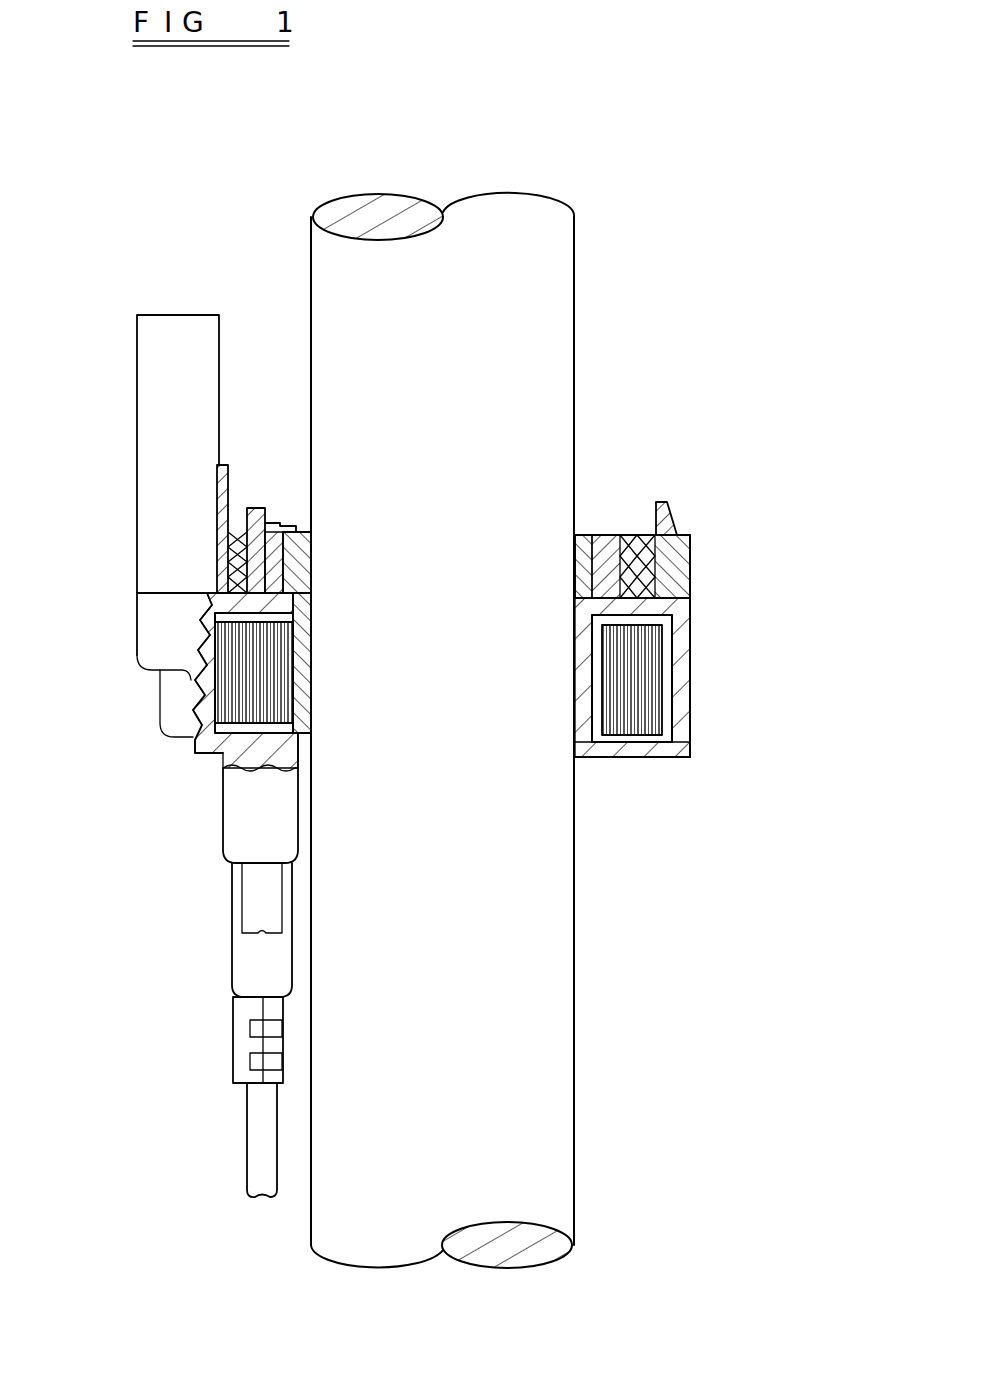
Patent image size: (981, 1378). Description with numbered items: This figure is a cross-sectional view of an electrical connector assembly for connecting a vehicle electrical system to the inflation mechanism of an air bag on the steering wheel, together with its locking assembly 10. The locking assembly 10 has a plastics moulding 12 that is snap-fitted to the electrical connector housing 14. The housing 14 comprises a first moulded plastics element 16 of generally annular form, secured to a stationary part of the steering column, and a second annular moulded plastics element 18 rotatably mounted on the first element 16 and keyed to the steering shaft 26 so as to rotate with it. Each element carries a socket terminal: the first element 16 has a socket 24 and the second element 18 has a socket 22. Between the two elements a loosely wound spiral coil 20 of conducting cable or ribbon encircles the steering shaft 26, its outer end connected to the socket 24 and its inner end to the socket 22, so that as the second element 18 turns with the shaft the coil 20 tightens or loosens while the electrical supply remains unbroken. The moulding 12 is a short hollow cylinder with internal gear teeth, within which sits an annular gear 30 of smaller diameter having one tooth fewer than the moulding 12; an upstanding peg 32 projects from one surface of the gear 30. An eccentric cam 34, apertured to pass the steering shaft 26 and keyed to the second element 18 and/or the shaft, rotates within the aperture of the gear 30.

The locking assembly 10 is at (712, 550).
The plastics moulding 12 is at (693, 578).
The housing 14 is at (718, 684).
The first moulded plastics element 16 is at (680, 712).
The second annular moulded plastics element 18 is at (656, 757).
The spiral coil 20 is at (230, 690).
The socket terminal 22 is at (240, 840).
The socket terminal 24 is at (145, 368).
The steering shaft 26 is at (555, 1072).
The annular gear 30 is at (604, 552).
The upstanding peg 32 is at (258, 517).
The eccentric cam 34 is at (588, 545).